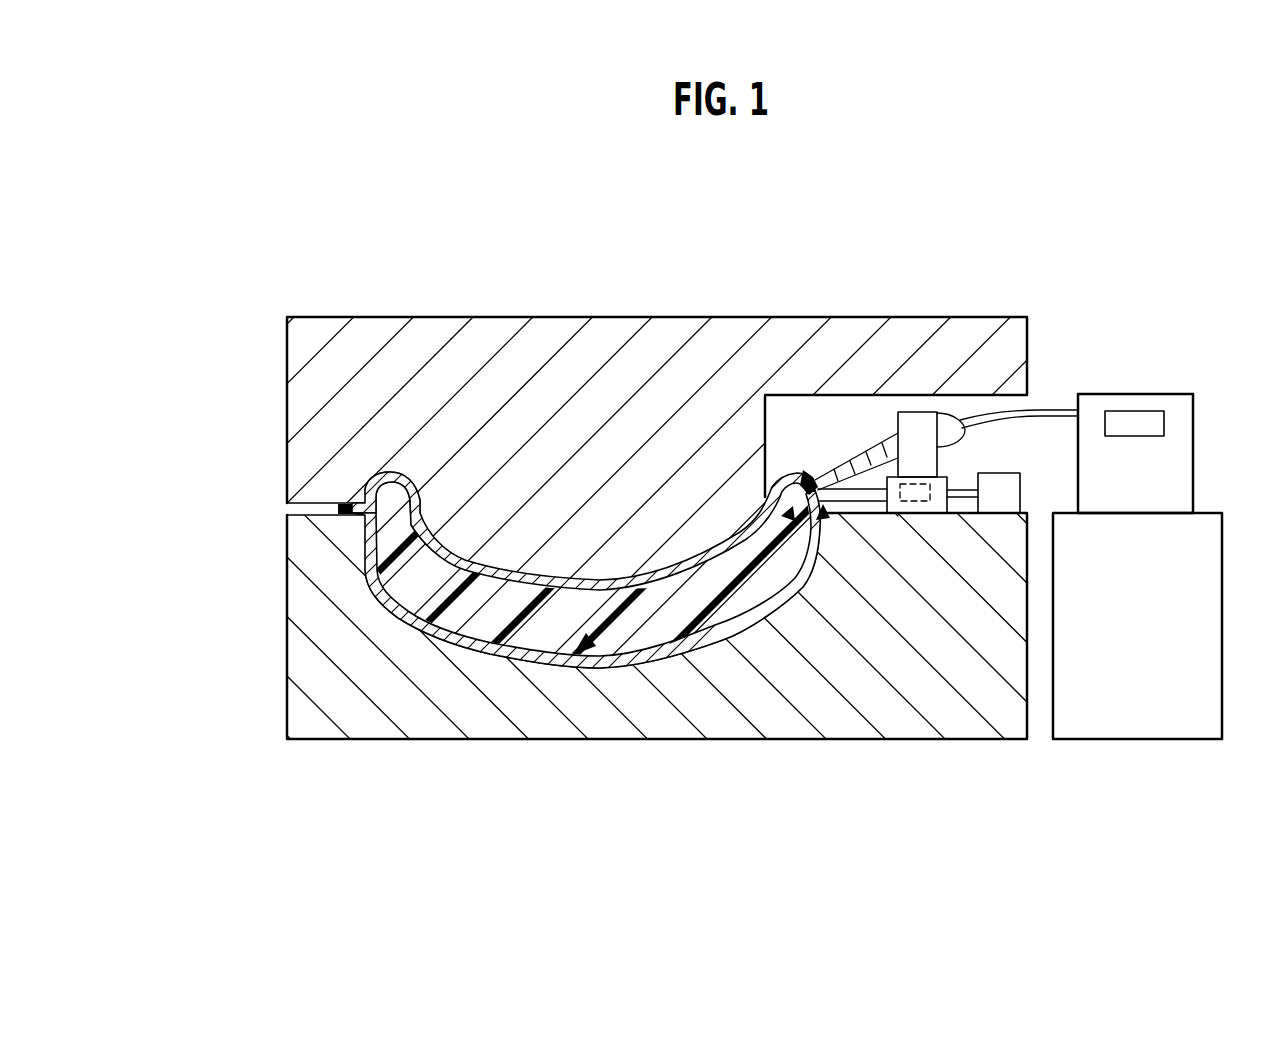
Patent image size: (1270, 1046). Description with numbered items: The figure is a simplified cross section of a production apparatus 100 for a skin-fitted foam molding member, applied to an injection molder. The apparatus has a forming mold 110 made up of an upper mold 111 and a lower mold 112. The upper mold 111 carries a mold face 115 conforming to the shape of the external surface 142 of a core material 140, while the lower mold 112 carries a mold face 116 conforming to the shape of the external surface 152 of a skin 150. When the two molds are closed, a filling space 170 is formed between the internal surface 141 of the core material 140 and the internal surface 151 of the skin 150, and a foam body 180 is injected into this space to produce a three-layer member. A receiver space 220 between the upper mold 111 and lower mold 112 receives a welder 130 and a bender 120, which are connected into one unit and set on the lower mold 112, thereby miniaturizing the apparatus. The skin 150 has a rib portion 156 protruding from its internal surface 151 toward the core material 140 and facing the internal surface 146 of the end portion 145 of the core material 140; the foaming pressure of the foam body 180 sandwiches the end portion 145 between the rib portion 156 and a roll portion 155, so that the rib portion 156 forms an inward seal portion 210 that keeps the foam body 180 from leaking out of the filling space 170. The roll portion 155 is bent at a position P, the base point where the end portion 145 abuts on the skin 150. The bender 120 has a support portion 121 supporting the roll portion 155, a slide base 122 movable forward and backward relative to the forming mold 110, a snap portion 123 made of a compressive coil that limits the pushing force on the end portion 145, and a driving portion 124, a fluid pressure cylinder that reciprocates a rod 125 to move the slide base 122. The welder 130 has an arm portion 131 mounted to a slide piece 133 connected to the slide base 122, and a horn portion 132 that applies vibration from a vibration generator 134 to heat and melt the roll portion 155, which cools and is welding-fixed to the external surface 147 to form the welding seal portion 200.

The production apparatus 100 is at (1067, 189).
The forming mold 110 is at (222, 442).
The upper mold 111 is at (312, 470).
The lower mold 112 is at (312, 552).
The mold face 115 is at (360, 500).
The mold face 116 is at (382, 603).
The bender 120 is at (925, 790).
The support portion 121 is at (900, 518).
The slide base 122 is at (1003, 516).
The snap portion 123 is at (908, 515).
The driving portion 124 is at (1053, 650).
The rod 125 is at (1025, 585).
The welder 130 is at (1012, 268).
The arm portion 131 is at (921, 423).
The horn portion 132 is at (896, 416).
The slide piece 133 is at (1000, 490).
The vibration generator 134 is at (1177, 412).
The core material 140 is at (392, 456).
The internal surface 141 is at (385, 497).
The external surface 142 is at (480, 548).
The end portion 145 is at (816, 454).
The internal surface 146 is at (772, 465).
The external surface 147 is at (767, 475).
The skin 150 is at (405, 640).
The internal surface 151 is at (440, 618).
The external surface 152 is at (497, 640).
The roll portion 155 is at (775, 468).
The rib portion 156 is at (790, 514).
The filling space 170 is at (542, 630).
The foam body 180 is at (606, 660).
The welding seal portion 200 is at (826, 474).
The inward seal portion 210 is at (821, 514).
The receiver space 220 is at (1024, 410).
The position P is at (877, 520).